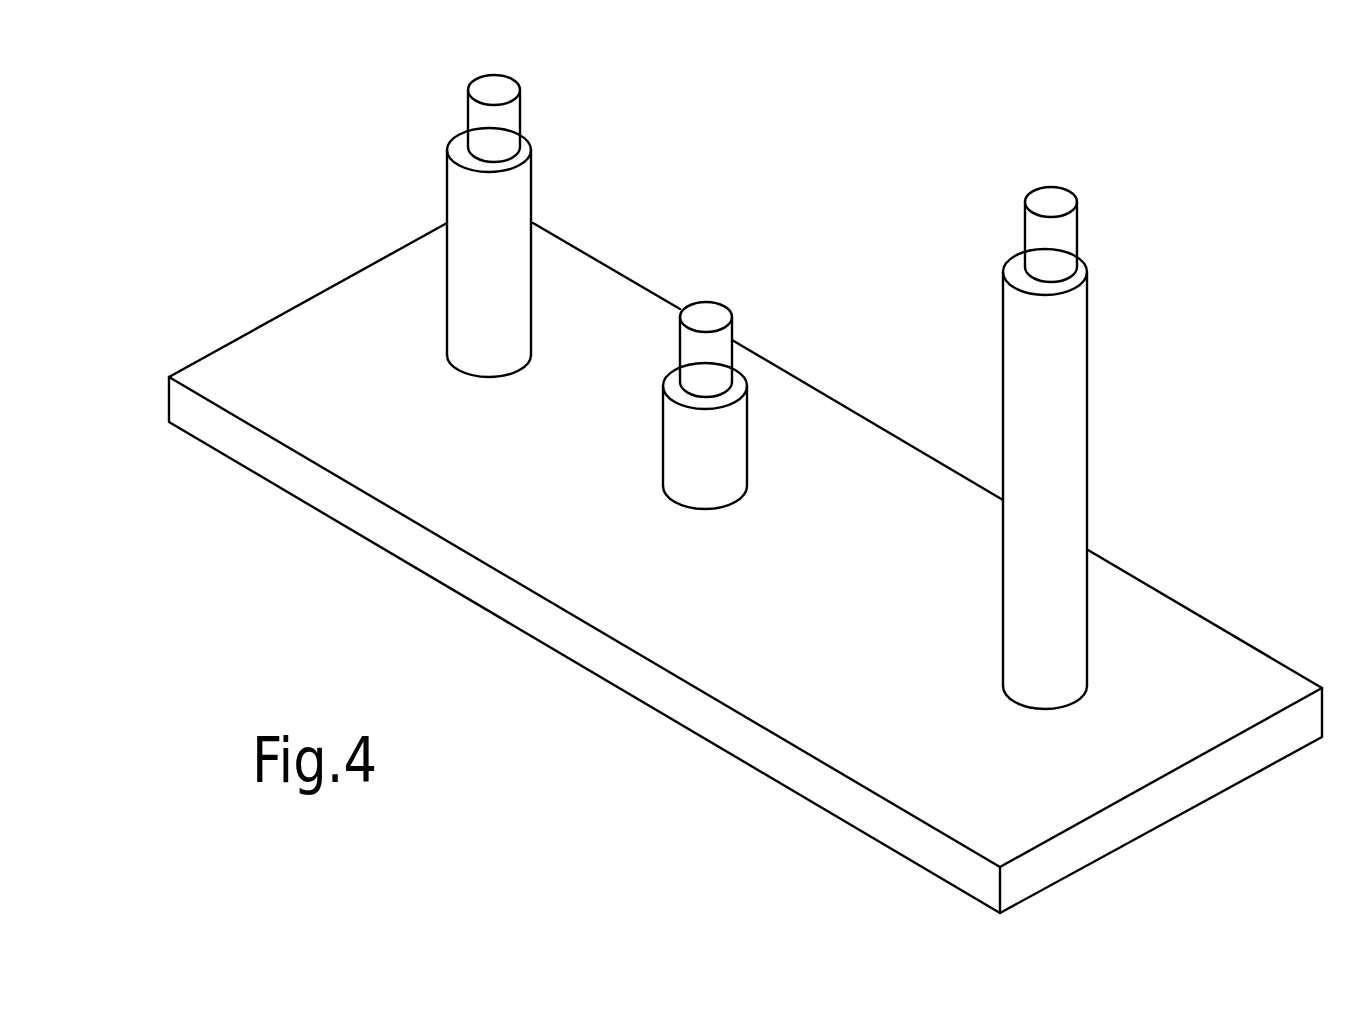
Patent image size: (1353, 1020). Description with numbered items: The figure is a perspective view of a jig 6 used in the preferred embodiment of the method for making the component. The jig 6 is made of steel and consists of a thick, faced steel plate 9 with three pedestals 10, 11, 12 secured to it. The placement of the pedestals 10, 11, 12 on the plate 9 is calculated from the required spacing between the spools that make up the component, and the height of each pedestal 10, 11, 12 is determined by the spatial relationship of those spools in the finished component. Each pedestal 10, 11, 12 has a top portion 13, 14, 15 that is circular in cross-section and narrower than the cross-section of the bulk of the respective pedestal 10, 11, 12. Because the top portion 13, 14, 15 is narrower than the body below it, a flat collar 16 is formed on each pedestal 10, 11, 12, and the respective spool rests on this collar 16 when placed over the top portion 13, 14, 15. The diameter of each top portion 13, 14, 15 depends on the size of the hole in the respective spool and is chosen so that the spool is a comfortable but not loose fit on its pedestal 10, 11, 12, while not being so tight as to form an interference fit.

The jig 6 is at (870, 214).
The steel plate 9 is at (1227, 643).
The pedestal 10 is at (460, 212).
The pedestal 11 is at (672, 418).
The pedestal 12 is at (1072, 423).
The top portion 13 is at (483, 117).
The top portion 14 is at (685, 337).
The top portion 15 is at (1068, 228).
The flat collar 16 is at (453, 140).